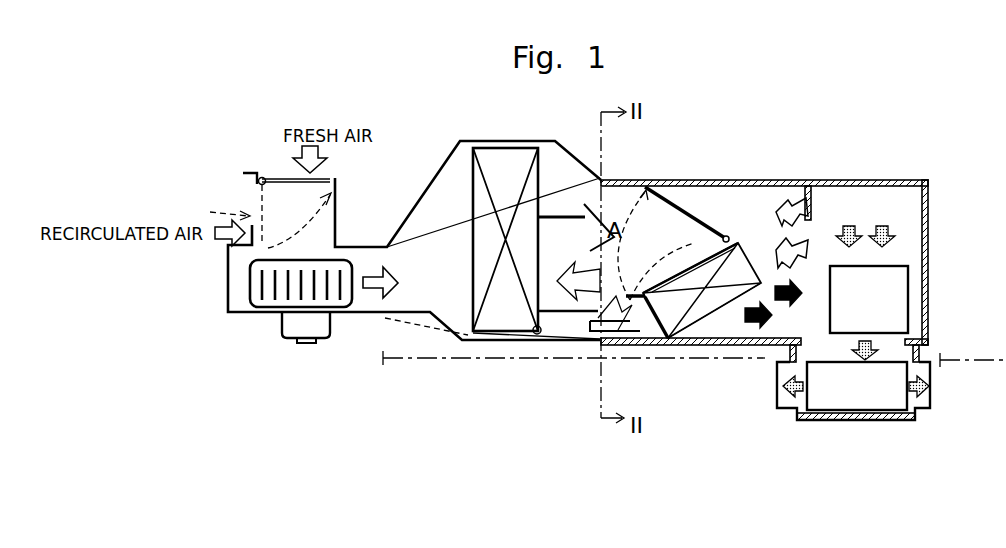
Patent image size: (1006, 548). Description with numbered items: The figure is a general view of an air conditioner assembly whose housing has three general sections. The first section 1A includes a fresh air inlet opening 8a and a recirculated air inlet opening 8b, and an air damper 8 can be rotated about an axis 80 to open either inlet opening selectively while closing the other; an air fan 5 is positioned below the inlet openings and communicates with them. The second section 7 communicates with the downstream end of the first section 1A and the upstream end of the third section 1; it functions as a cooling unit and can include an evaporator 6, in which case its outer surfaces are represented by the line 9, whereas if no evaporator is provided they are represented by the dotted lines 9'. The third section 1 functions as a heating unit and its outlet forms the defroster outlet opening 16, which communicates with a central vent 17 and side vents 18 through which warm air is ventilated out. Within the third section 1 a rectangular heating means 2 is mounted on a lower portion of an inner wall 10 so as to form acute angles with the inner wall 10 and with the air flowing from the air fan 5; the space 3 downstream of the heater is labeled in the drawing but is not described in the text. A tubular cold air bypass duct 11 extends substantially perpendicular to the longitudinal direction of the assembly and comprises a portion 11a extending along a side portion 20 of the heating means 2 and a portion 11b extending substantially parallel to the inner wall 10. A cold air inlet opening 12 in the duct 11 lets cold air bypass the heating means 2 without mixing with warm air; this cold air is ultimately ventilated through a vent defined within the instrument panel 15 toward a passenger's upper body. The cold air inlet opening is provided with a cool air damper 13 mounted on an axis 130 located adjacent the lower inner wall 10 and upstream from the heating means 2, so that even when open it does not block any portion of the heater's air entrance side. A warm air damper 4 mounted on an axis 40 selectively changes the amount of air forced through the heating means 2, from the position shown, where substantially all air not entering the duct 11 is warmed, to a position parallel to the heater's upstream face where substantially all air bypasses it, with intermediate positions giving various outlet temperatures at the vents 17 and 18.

The third section 1 is at (735, 357).
The first section 1A is at (236, 323).
The heating means 2 is at (750, 285).
The air distribution chamber 3 is at (758, 222).
The warm air damper 4 is at (681, 202).
The air fan 5 is at (355, 300).
The evaporator 6 is at (472, 258).
The second section 7 is at (416, 316).
The air damper 8 is at (331, 180).
The fresh air inlet opening 8a is at (265, 170).
The recirculated air inlet opening 8b is at (217, 206).
The axis 80 is at (258, 182).
The line 9 is at (536, 372).
The dotted lines 9' is at (492, 257).
The inner wall 10 is at (676, 190).
The tubular cold air bypass duct 11 is at (672, 240).
The portion 11a is at (700, 272).
The portion 11b is at (684, 268).
The cold air inlet opening 12 is at (578, 281).
The cool air damper 13 is at (631, 336).
The axis 130 is at (599, 341).
The instrument panel 15 is at (512, 362).
The defroster outlet opening 16 is at (905, 272).
The central vent 17 is at (873, 412).
The side vents 18 is at (778, 398).
The side portion 20 is at (652, 322).
The axis 40 is at (782, 235).